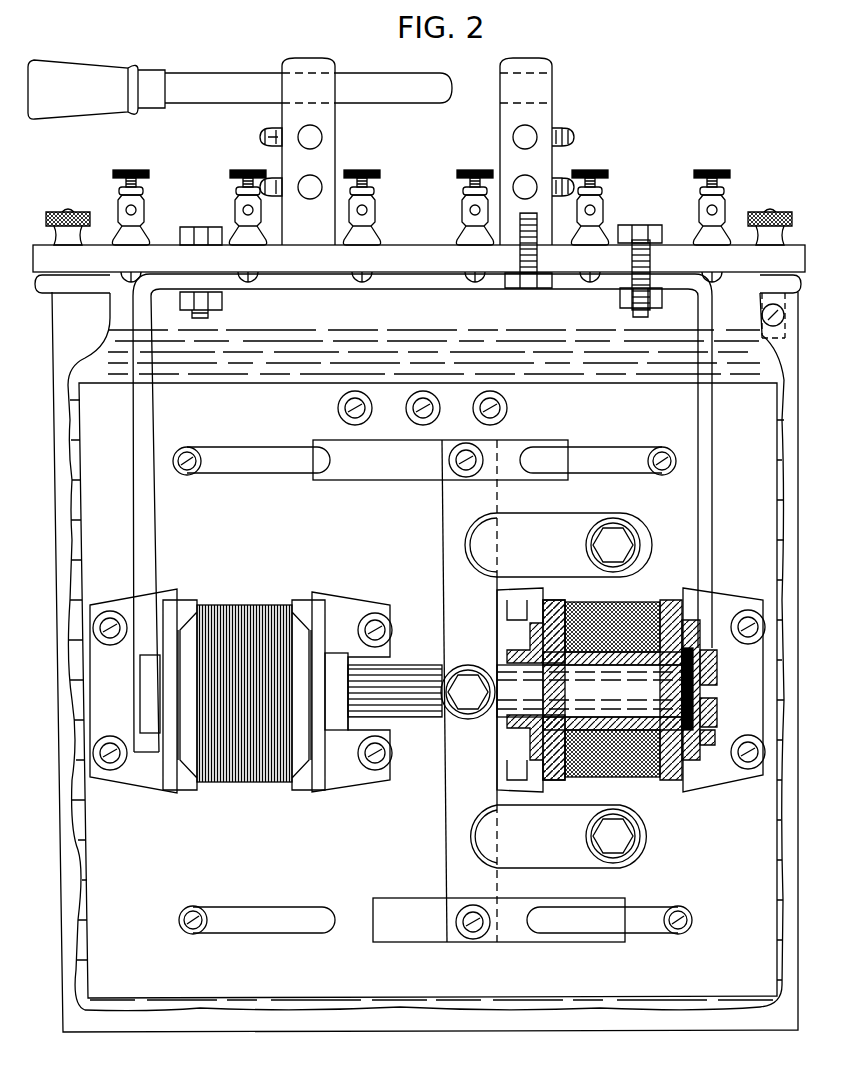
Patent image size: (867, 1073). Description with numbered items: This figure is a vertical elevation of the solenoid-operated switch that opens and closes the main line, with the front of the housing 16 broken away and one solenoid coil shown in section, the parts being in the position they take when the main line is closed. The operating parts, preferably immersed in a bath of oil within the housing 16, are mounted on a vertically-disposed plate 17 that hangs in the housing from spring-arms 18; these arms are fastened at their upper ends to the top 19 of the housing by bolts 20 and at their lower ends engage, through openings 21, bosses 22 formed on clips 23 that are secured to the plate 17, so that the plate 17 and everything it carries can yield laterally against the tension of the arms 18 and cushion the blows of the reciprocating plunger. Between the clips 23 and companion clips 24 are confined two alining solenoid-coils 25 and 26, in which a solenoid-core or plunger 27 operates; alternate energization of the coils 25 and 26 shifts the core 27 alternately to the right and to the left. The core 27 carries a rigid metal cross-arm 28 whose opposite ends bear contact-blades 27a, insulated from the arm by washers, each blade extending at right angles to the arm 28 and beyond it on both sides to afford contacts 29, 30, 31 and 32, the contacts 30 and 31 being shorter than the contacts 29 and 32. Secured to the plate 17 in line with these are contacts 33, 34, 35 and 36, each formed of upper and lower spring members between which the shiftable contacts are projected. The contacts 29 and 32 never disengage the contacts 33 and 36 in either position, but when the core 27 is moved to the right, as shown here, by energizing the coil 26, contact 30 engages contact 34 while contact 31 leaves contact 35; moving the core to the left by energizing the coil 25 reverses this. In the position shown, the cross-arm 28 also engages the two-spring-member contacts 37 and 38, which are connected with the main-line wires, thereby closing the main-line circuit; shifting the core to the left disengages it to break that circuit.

The housing 16 is at (64, 845).
The plate 17 is at (96, 535).
The spring-arms 18 is at (150, 528).
The top 19 is at (92, 250).
The bolts 20 is at (208, 312).
The openings 21 is at (148, 652).
The bosses 22 is at (140, 708).
The clips 23 is at (124, 603).
The companion clips 24 is at (350, 602).
The solenoid-coil 25 is at (263, 773).
The solenoid-coil 26 is at (640, 603).
The solenoid-core 27 is at (412, 718).
The contact-blades 27a is at (490, 452).
The cross-arm 28 is at (448, 804).
The contact 29 is at (374, 480).
The contact 30 is at (546, 478).
The contact 31 is at (405, 940).
The contact 32 is at (566, 935).
The contact 33 is at (258, 467).
The contact 34 is at (664, 478).
The contact 35 is at (238, 934).
The contact 36 is at (653, 930).
The contact 37 is at (602, 522).
The contact 38 is at (612, 806).